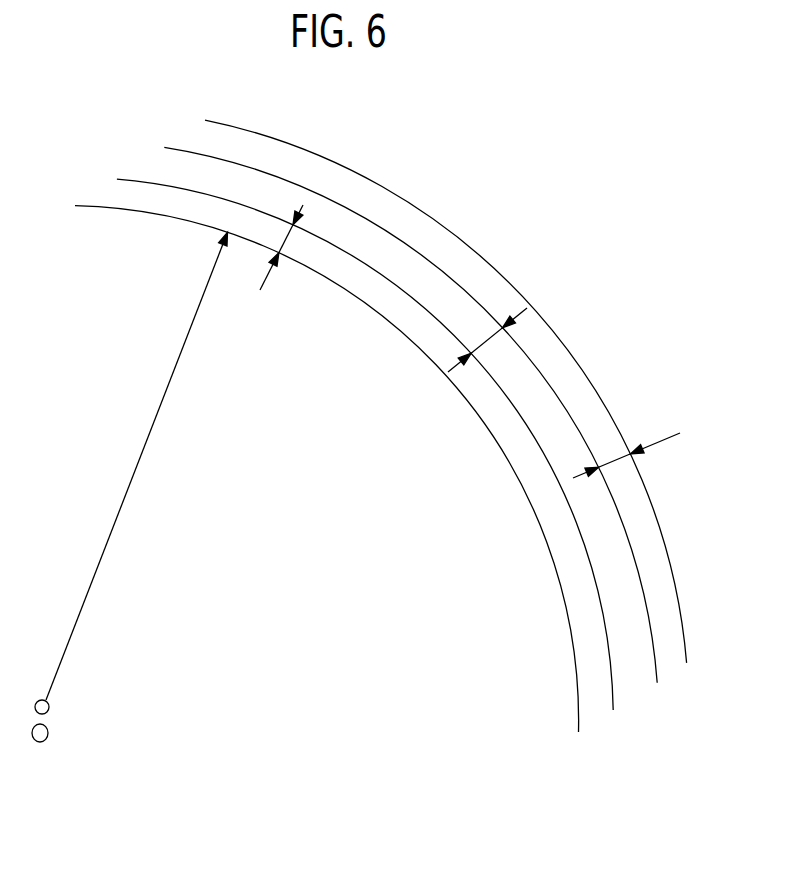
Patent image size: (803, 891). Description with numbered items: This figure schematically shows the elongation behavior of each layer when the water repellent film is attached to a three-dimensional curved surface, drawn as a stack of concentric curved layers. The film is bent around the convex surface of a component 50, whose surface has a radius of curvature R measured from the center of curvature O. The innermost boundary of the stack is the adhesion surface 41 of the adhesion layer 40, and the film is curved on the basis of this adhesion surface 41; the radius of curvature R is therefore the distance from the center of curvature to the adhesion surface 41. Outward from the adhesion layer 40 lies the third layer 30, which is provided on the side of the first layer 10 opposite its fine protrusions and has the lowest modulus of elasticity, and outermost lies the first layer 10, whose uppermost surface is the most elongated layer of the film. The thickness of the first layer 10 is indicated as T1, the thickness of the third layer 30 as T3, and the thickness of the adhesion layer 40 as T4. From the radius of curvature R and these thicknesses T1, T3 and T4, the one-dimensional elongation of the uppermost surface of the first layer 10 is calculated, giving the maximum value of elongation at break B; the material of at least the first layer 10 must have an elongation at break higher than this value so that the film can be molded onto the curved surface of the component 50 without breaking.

The first layer 10 is at (650, 523).
The third layer 30 is at (400, 270).
The adhesion layer 40 is at (343, 275).
The adhesion surface 41 is at (112, 208).
The component 50 is at (435, 690).
The radius of curvature R is at (130, 487).
The thickness of the first layer T1 is at (626, 443).
The thickness of the third layer T3 is at (487, 339).
The thickness of the adhesion layer T4 is at (281, 259).